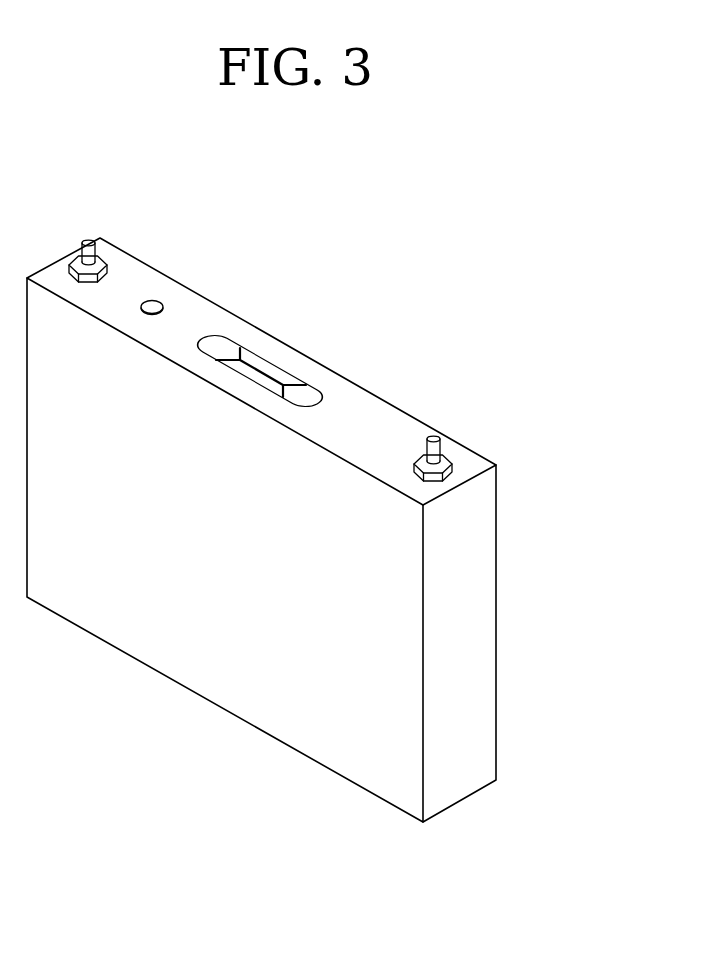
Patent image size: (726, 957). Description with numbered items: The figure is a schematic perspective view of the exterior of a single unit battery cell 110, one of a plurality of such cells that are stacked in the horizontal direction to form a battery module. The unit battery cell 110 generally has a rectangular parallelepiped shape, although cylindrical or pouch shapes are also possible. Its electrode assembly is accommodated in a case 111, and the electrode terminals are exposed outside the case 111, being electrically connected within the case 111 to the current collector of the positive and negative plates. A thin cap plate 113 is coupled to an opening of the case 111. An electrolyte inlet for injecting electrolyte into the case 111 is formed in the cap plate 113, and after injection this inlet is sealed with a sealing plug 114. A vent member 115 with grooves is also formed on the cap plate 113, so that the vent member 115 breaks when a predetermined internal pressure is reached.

The unit battery cell 110 is at (505, 420).
The case 111 is at (217, 680).
The cap plate 113 is at (358, 403).
The sealing plug 114 is at (153, 303).
The vent member 115 is at (271, 366).